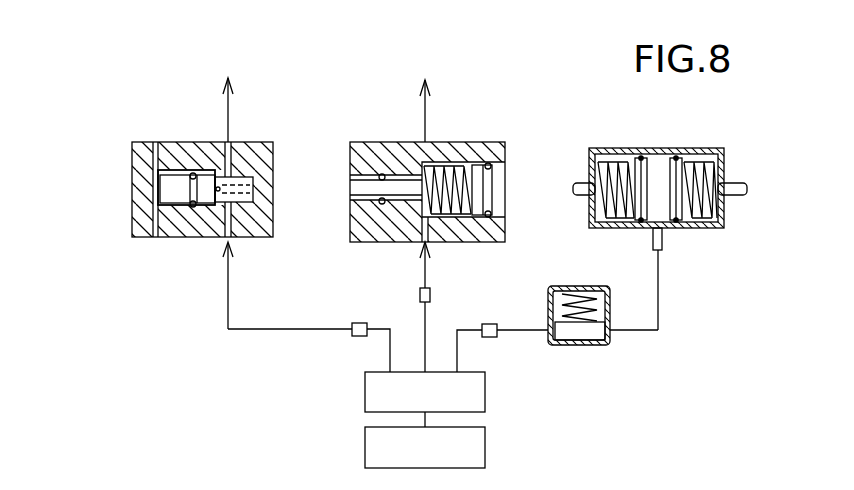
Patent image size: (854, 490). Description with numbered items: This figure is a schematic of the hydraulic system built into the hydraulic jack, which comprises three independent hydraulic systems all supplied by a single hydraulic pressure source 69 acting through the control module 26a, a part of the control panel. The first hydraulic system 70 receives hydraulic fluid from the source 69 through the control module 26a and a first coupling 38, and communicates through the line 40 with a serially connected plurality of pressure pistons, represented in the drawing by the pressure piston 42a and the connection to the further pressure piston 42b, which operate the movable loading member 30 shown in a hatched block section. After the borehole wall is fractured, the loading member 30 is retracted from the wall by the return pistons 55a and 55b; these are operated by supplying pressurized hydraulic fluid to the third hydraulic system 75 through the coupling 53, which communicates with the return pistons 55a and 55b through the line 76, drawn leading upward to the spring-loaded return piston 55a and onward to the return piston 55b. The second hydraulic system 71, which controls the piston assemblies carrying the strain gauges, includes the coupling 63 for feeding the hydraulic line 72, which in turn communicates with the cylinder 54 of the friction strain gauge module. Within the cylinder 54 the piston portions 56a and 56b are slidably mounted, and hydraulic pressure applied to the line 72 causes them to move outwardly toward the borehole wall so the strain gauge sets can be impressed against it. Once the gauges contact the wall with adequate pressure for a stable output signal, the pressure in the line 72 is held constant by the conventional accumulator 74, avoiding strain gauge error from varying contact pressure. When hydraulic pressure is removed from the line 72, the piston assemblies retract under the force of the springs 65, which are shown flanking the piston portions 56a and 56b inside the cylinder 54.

The movable loading member 30 is at (138, 198).
The pressure piston 42a is at (176, 187).
The pressure piston 42b is at (229, 99).
The return piston 55a is at (498, 187).
The return piston 55b is at (432, 99).
The cylinder 54 is at (658, 197).
The springs 65 is at (615, 163).
The piston portion 56a is at (650, 170).
The piston portion 56b is at (680, 213).
The line 40 is at (228, 283).
The first hydraulic system 70 is at (217, 309).
The first coupling 38 is at (352, 332).
The line 76 is at (423, 272).
The coupling 53 is at (420, 295).
The third hydraulic system 75 is at (450, 294).
The coupling 63 is at (493, 325).
The second hydraulic system 71 is at (678, 290).
The hydraulic line 72 is at (658, 272).
The accumulator 74 is at (590, 346).
The control module 26a is at (485, 392).
The hydraulic pressure source 69 is at (485, 448).